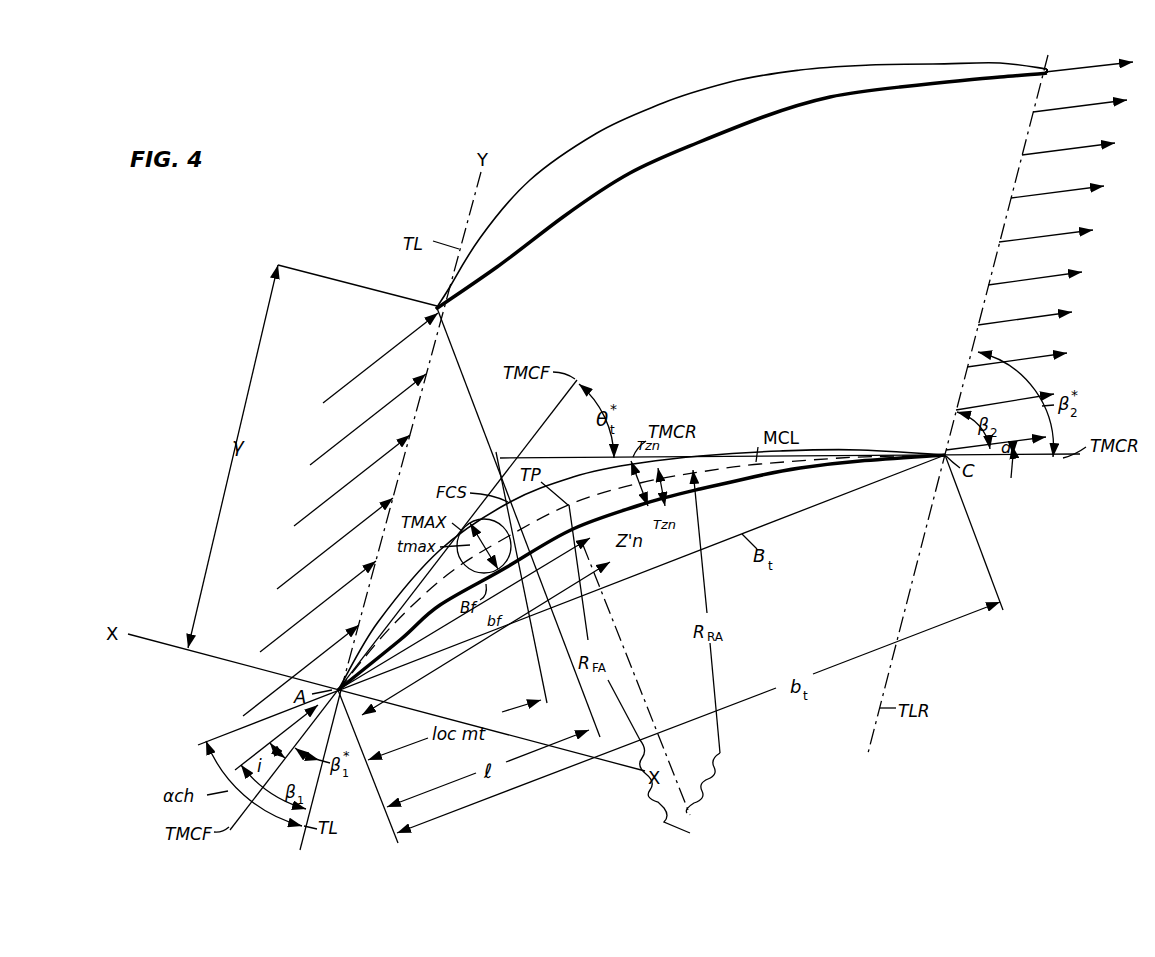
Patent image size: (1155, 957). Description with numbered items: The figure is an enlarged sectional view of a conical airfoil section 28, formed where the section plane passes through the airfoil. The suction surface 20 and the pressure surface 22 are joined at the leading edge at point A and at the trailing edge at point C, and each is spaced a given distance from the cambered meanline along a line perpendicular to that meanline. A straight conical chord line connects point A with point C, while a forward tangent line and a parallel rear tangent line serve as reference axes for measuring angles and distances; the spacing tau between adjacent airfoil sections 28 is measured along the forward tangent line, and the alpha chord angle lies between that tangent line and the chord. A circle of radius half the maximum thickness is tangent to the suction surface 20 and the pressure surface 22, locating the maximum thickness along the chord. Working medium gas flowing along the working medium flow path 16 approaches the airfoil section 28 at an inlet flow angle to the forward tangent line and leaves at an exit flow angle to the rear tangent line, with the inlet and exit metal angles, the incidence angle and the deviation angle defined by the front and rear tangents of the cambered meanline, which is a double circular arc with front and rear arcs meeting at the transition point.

The working medium flow path 16 is at (291, 520).
The suction surface 20 is at (722, 453).
The pressure surface 22 is at (738, 482).
The conical airfoil section 28 is at (848, 446).